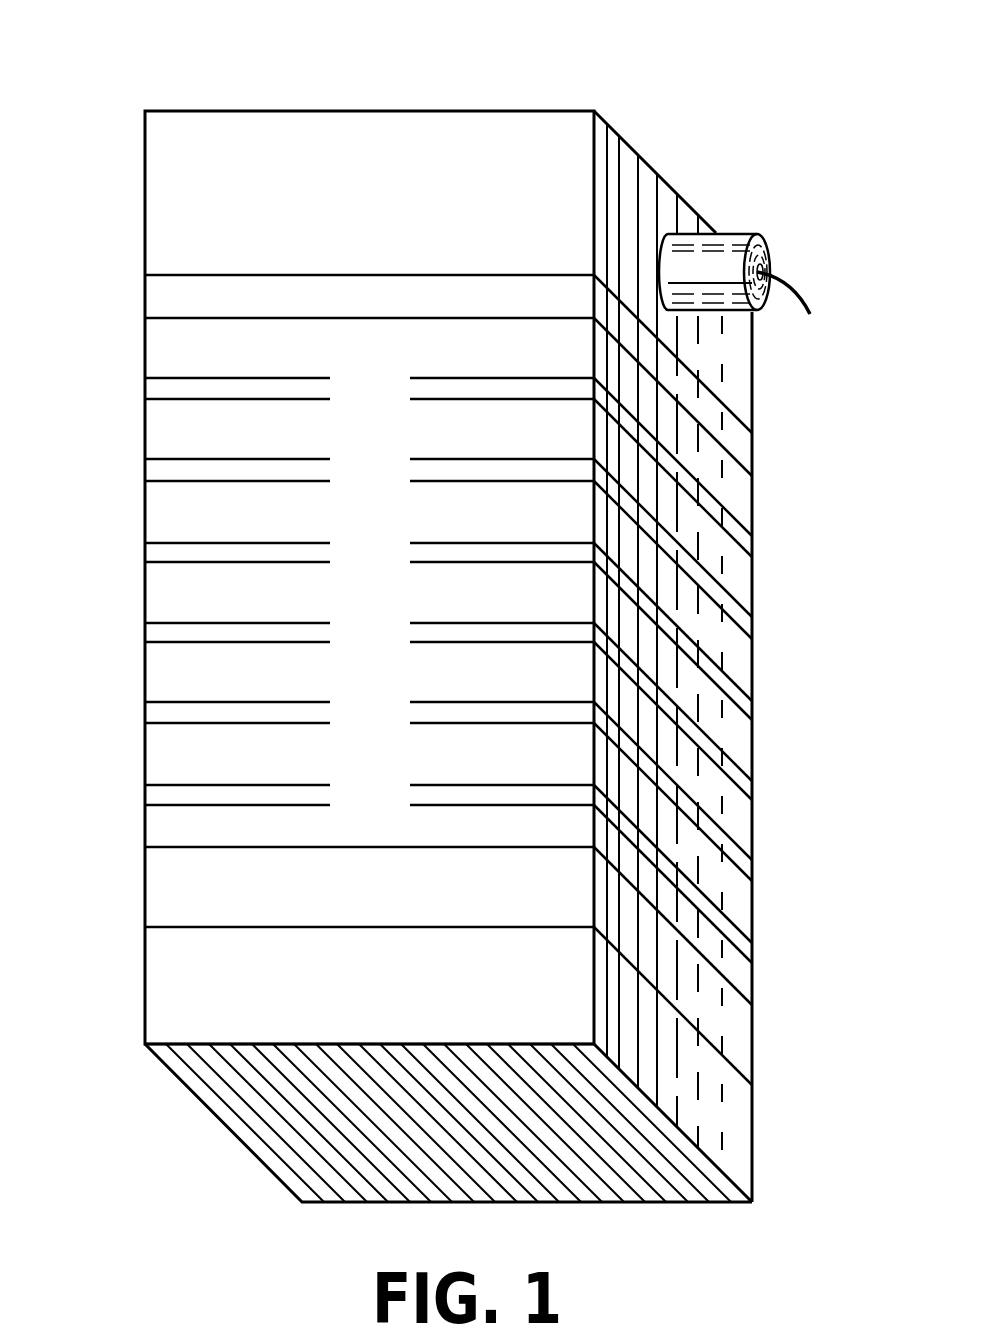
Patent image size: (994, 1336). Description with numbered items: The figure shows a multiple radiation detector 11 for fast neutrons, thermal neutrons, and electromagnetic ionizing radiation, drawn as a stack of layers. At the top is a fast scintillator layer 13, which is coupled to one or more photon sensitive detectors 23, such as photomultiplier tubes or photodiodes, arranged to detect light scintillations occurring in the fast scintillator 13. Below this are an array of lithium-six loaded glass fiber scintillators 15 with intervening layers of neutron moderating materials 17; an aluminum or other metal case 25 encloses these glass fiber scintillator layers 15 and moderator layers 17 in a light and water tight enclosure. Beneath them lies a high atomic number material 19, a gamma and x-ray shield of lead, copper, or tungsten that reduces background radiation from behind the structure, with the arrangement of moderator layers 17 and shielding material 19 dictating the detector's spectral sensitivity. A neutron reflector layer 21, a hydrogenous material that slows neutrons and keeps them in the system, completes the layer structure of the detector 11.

The multiple radiation detector 11 is at (720, 74).
The fast scintillator layer 13 is at (158, 246).
The 6Li loaded glass fiber scintillators 15 is at (158, 390).
The neutron moderating material layers 17 is at (158, 352).
The high atomic number (high Z) material 19 is at (158, 887).
The neutron reflector layer 21 is at (158, 977).
The photon sensitive detectors 23 is at (753, 237).
The aluminum or other metal case 25 is at (158, 301).